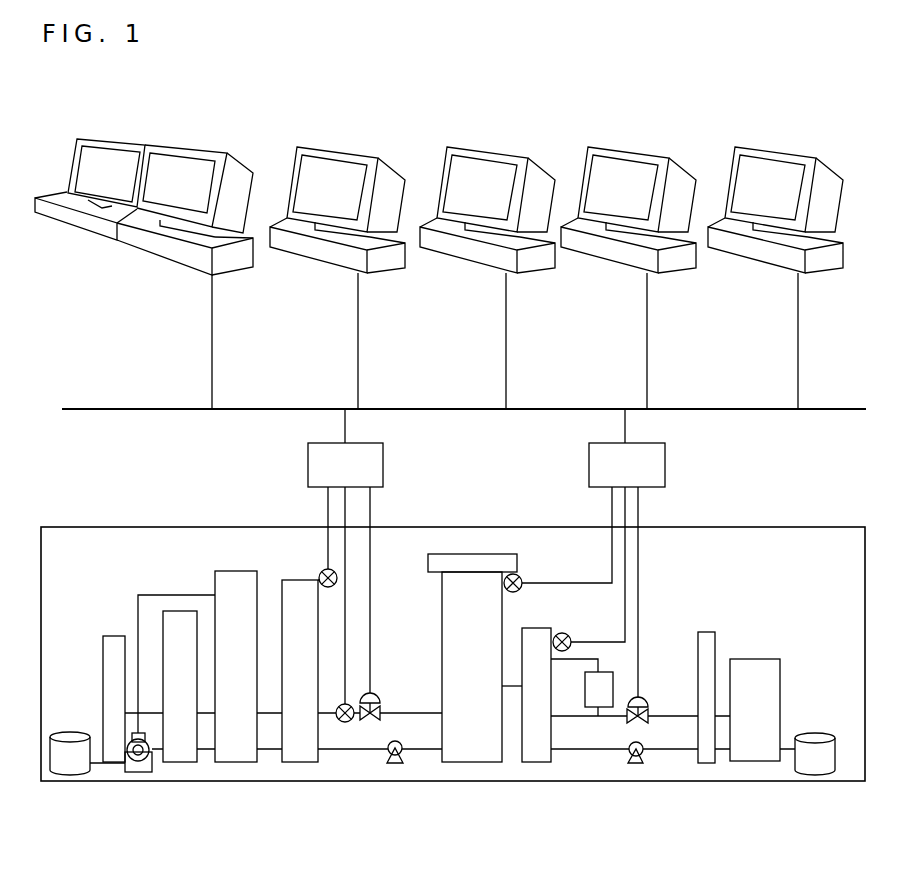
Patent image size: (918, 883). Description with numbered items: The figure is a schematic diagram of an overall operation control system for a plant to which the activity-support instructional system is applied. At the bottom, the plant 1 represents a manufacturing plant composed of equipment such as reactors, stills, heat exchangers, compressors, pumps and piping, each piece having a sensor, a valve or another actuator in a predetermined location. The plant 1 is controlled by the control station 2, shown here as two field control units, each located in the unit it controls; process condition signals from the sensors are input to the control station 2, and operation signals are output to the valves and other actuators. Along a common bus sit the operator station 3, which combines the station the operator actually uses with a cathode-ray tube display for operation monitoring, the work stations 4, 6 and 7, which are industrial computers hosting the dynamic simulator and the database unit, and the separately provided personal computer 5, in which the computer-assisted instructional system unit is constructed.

The plant 1 is at (118, 527).
The control station 2 is at (385, 459).
The operator station 3 is at (218, 273).
The work station 4 is at (387, 273).
The personal computer 5 is at (535, 273).
The work station 6 is at (668, 273).
The work station 7 is at (828, 273).